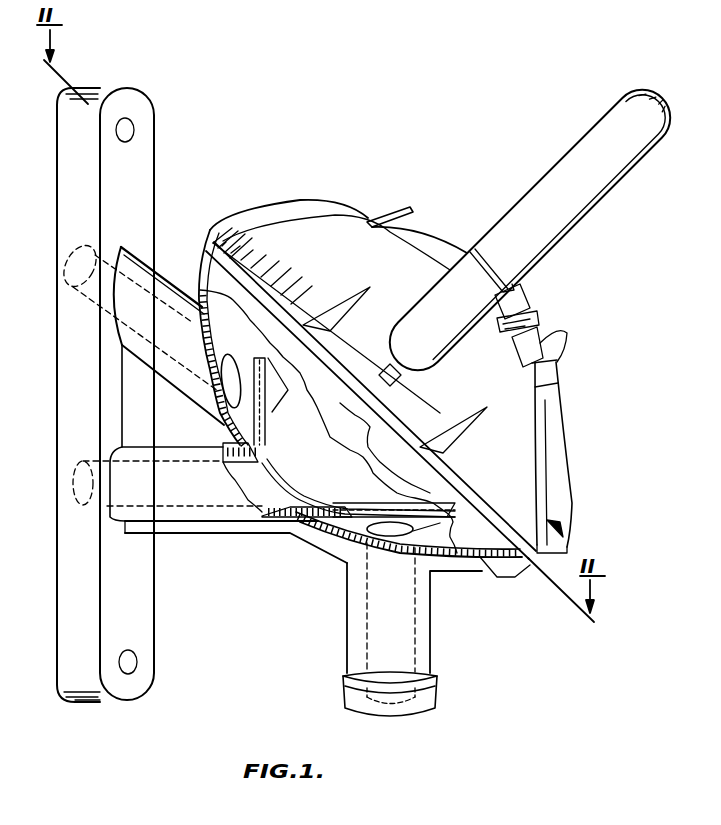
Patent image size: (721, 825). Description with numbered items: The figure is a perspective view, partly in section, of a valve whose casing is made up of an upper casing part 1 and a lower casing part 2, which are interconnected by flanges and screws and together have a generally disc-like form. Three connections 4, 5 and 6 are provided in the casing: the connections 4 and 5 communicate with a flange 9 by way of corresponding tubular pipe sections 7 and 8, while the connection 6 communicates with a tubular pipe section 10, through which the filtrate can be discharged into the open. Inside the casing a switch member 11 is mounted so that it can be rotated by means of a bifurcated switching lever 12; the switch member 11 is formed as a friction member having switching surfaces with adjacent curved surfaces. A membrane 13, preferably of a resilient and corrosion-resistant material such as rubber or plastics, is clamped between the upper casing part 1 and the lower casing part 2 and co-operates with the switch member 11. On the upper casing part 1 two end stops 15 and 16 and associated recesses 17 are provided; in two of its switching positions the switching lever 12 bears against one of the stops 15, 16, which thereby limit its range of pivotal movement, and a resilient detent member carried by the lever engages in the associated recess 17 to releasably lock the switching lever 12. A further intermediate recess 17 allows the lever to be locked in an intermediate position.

The upper casing part 1 is at (563, 443).
The lower casing part 2 is at (461, 573).
The connection 4 is at (282, 328).
The connection 5 is at (265, 477).
The connection 6 is at (440, 514).
The tubular pipe section 7 is at (170, 298).
The tubular pipe section 8 is at (164, 458).
The flange 9 is at (140, 160).
The tubular pipe section 10 is at (352, 604).
The switch member 11 is at (353, 467).
The bifurcated switching lever 12 is at (530, 194).
The membrane 13 is at (279, 500).
The end stop 15 is at (400, 205).
The end stop 16 is at (552, 367).
The recess 17 is at (527, 313).